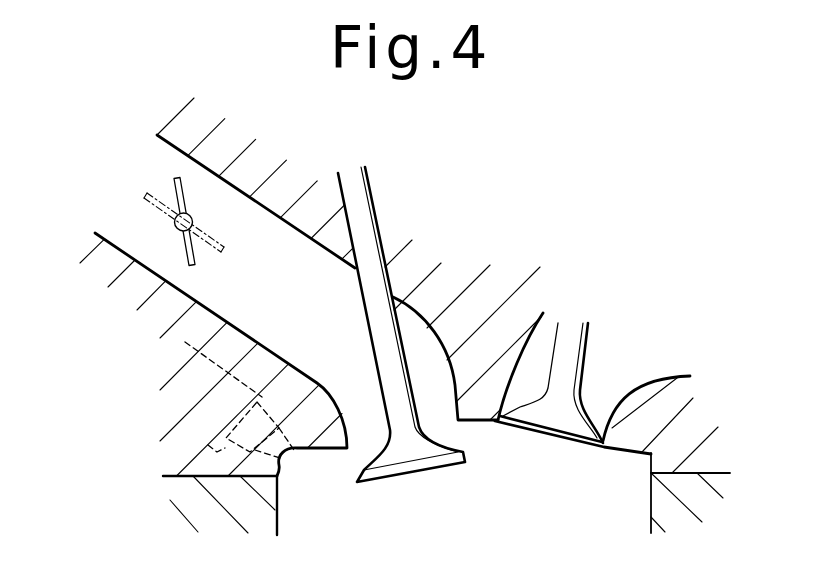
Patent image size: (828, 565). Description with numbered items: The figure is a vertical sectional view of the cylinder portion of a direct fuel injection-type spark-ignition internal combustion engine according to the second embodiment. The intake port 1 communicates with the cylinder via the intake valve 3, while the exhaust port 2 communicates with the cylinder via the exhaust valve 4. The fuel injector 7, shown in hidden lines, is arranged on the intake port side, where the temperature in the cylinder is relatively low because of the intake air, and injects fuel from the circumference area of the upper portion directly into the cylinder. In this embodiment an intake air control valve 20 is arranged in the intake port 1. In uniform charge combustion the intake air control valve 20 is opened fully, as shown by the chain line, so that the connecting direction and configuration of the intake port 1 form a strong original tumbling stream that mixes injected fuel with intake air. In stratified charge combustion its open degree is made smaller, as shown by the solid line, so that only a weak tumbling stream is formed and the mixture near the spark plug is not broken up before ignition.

The intake port 1 is at (263, 235).
The exhaust port 2 is at (613, 375).
The intake valve 3 is at (377, 294).
The exhaust valve 4 is at (567, 367).
The fuel injector 7 is at (190, 433).
The intake air control valve 20 is at (180, 189).